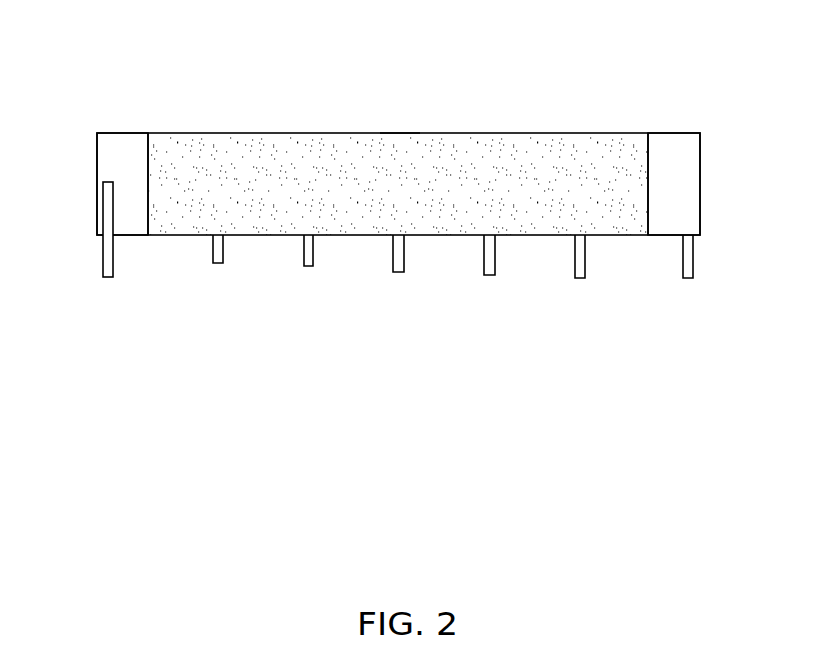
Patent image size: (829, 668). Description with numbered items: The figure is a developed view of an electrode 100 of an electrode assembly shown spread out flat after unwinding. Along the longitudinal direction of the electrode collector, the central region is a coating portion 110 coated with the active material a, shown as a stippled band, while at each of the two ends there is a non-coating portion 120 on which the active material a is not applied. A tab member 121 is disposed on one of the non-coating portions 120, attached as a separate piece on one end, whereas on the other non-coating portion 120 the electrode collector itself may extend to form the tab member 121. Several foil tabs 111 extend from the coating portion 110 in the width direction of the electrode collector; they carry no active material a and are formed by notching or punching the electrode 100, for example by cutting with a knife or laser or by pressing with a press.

The electrode 100 is at (508, 82).
The coating portion 110 is at (252, 133).
The active material a is at (397, 138).
The non-coating portion 120 is at (108, 163).
The tab member 121 is at (106, 280).
The foil tab 111 is at (307, 266).